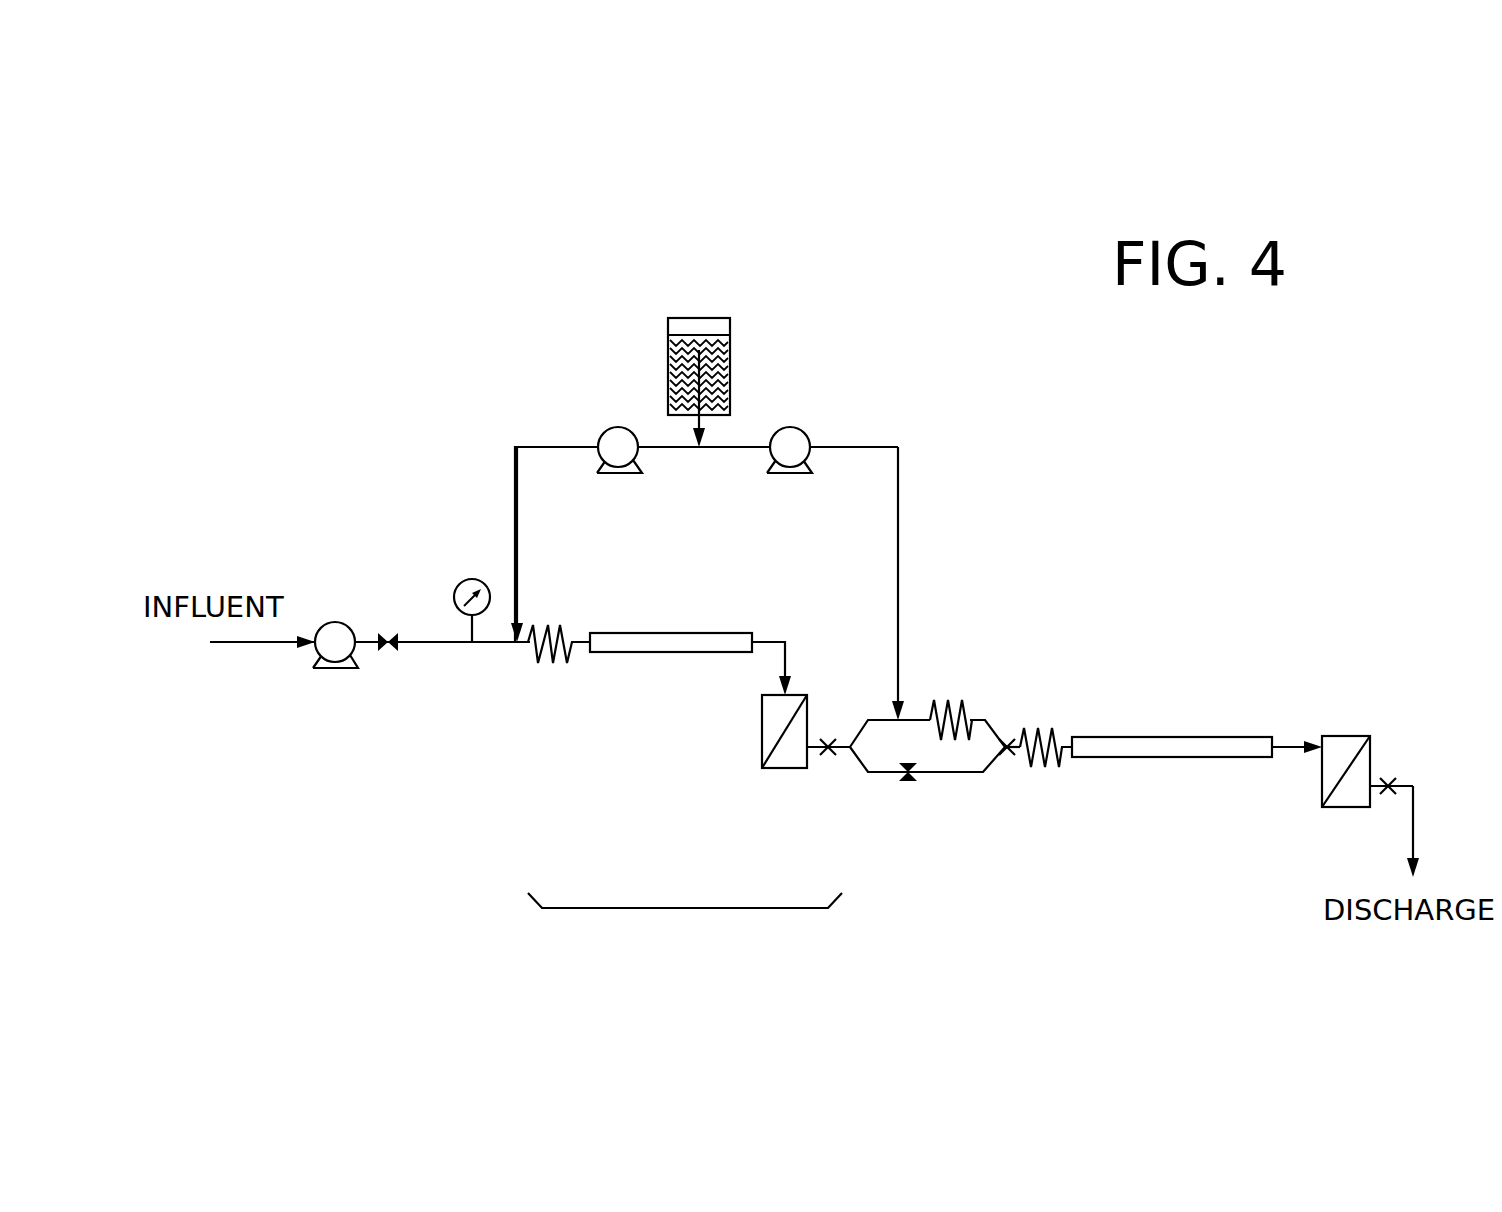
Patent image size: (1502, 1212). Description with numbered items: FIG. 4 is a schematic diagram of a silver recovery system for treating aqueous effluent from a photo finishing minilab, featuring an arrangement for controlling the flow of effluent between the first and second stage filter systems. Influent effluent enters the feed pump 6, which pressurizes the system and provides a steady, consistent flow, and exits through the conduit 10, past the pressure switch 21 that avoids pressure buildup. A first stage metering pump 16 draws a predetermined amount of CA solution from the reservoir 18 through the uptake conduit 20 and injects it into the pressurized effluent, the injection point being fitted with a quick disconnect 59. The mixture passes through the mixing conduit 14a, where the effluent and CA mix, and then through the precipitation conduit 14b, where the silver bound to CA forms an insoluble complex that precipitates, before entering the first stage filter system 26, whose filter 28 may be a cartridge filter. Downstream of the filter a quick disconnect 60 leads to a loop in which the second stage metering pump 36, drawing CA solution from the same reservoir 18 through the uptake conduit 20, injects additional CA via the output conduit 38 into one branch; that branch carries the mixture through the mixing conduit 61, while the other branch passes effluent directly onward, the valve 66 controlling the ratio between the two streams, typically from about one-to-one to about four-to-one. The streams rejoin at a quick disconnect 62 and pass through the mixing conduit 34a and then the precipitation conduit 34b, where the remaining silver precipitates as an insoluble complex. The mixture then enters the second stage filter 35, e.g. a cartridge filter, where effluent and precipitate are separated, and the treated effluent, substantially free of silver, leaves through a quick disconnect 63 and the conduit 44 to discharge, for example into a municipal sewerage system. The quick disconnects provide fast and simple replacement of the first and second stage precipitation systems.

The feed pump 6 is at (330, 675).
The conduit 10 is at (437, 642).
The pressure switch 21 is at (472, 580).
The quick disconnect 59 is at (512, 645).
The mixing conduit 14a is at (545, 663).
The precipitation conduit 14b is at (628, 628).
The first stage filter 28 is at (758, 733).
The quick disconnect 60 is at (827, 758).
The mixing conduit 61 is at (945, 697).
The valve 66 is at (908, 783).
The quick disconnect 62 is at (1008, 750).
The mixing conduit 34a is at (1047, 725).
The precipitation conduit 34b is at (1157, 733).
The second stage filter 35 is at (1347, 730).
The quick disconnect 63 is at (1392, 778).
The conduit 44 is at (1413, 845).
The uptake conduit 20 is at (715, 450).
The output conduit 38 is at (900, 505).
The first stage metering pump 16 is at (608, 474).
The second stage metering pump 36 is at (792, 477).
The reservoir 18 is at (700, 317).
The first stage filter system 26 is at (685, 919).